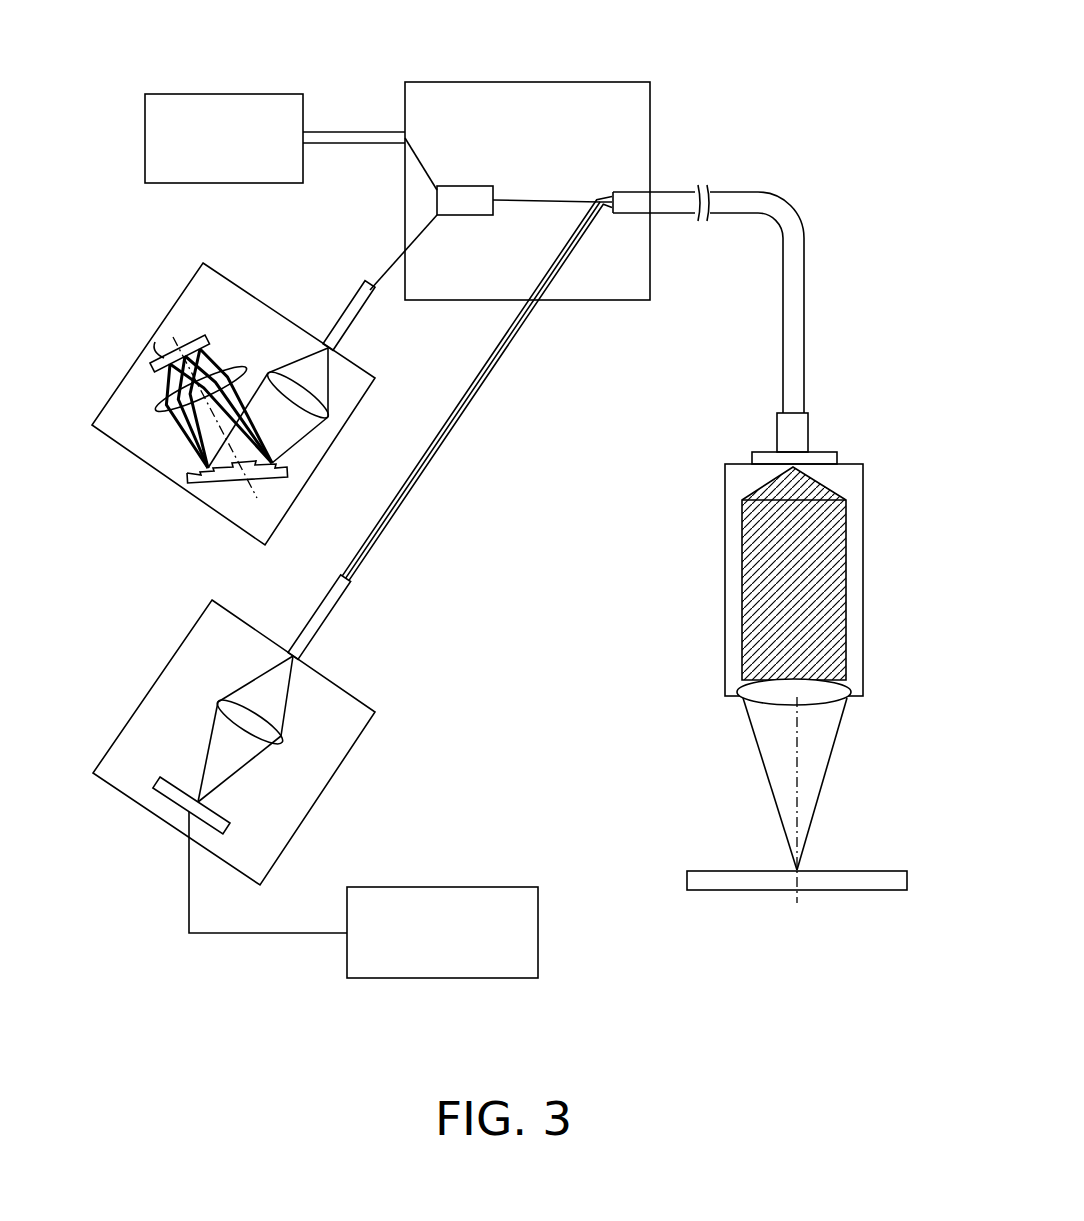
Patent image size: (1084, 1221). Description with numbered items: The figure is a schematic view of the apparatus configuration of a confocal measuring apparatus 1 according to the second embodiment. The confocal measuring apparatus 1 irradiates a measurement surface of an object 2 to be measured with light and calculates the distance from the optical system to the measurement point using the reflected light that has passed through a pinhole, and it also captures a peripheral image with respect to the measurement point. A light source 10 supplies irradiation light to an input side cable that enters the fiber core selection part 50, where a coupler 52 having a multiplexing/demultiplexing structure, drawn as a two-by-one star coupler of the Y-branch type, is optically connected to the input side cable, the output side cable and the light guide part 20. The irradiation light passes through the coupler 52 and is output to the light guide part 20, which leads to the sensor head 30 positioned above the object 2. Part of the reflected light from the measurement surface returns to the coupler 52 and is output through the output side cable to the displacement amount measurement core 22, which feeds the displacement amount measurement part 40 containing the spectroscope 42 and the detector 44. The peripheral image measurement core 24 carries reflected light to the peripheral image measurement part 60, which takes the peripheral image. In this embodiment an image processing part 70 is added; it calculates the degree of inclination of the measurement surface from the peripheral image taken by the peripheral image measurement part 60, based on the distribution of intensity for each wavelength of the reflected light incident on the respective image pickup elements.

The confocal measuring apparatus 1 is at (740, 34).
The object to be measured 2 is at (687, 882).
The light source 10 is at (268, 94).
The light guide part 20 is at (752, 192).
The displacement amount measurement core 22 is at (341, 318).
The peripheral image measurement core 24 is at (310, 614).
The sensor head 30 is at (725, 571).
The displacement amount measurement part 40 is at (233, 397).
The spectroscope 42 is at (287, 467).
The detector 44 is at (211, 340).
The fiber core selection part 50 is at (511, 176).
The coupler 52 is at (463, 186).
The peripheral image measurement part 60 is at (234, 728).
The image processing part 70 is at (505, 887).